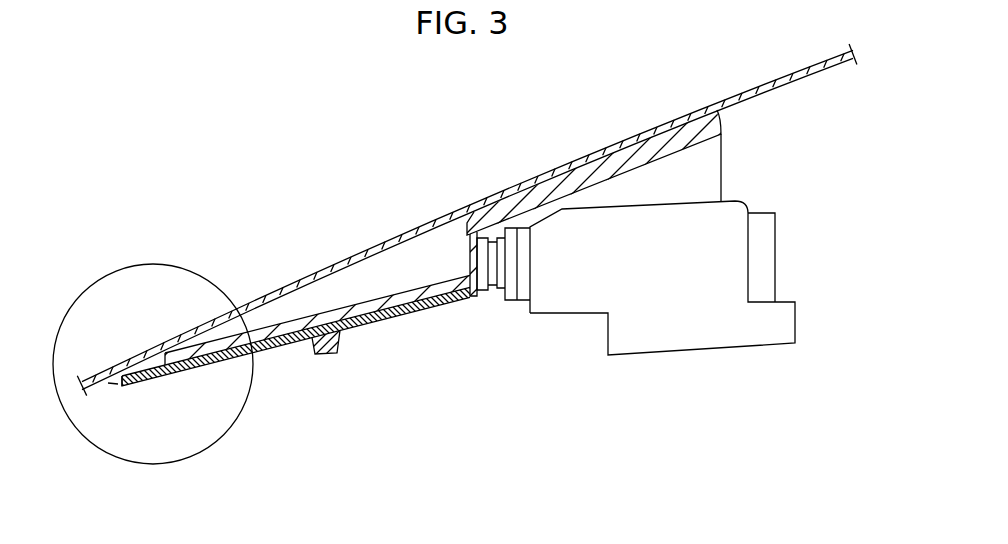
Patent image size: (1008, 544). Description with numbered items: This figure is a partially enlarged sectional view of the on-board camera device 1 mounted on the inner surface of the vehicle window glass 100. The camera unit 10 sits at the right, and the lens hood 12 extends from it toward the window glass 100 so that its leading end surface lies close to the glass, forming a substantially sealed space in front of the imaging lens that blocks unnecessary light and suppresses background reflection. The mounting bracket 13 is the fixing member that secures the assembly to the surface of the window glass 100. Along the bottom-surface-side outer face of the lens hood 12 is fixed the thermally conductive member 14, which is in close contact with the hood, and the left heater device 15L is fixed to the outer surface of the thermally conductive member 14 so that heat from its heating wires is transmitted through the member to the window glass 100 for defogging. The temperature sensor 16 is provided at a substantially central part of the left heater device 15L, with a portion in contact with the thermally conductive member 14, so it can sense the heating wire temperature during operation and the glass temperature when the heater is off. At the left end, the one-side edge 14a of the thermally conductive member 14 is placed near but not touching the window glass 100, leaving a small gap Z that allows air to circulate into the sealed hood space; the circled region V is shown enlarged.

The on-board camera device 1 is at (509, 181).
The window glass 100 is at (420, 228).
The mounting bracket 13 is at (647, 142).
The lens hood 12 is at (223, 343).
The left heater device 15L is at (197, 353).
The thermally conductive member 14 is at (150, 370).
The one-side edge 14a is at (131, 396).
The temperature sensor 16 is at (317, 352).
The camera unit 10 is at (809, 181).
The gap Z is at (108, 388).
The enlarged view region V is at (227, 443).